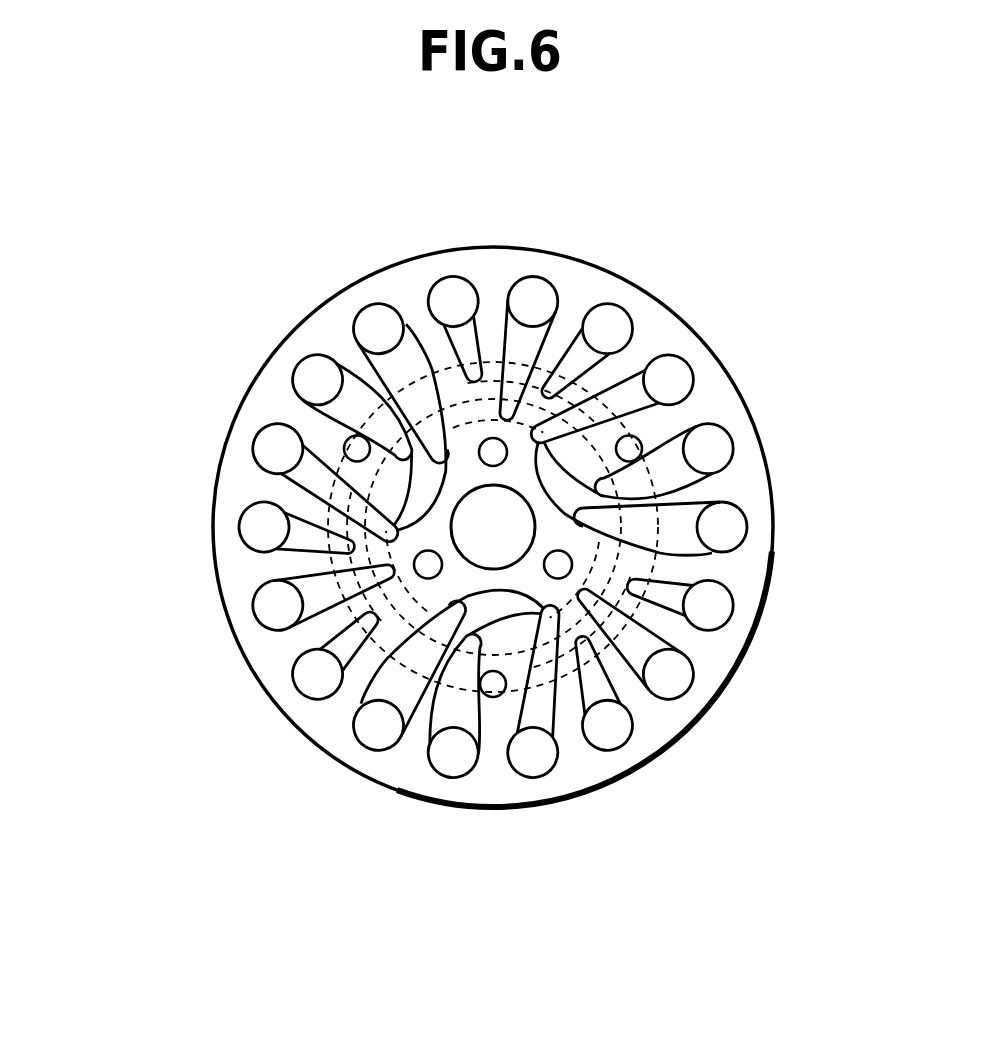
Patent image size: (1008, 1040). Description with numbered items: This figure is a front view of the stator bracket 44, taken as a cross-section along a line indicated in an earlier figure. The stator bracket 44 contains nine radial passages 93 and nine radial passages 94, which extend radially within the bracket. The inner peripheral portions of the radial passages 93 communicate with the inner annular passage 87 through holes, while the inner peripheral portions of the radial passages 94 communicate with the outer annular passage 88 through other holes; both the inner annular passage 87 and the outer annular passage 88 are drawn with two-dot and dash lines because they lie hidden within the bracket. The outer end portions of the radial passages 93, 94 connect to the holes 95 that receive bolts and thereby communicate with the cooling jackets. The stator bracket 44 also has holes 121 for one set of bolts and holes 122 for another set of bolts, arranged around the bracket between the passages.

The stator bracket 44 is at (316, 308).
The inner annular passage 87 is at (343, 563).
The outer annular passage 88 is at (448, 397).
The radial passages 93 is at (303, 452).
The radial passages 94 is at (350, 382).
The holes for the bolts 95 is at (267, 467).
The holes for the bolts 121 is at (504, 447).
The holes for the bolts 122 is at (345, 443).